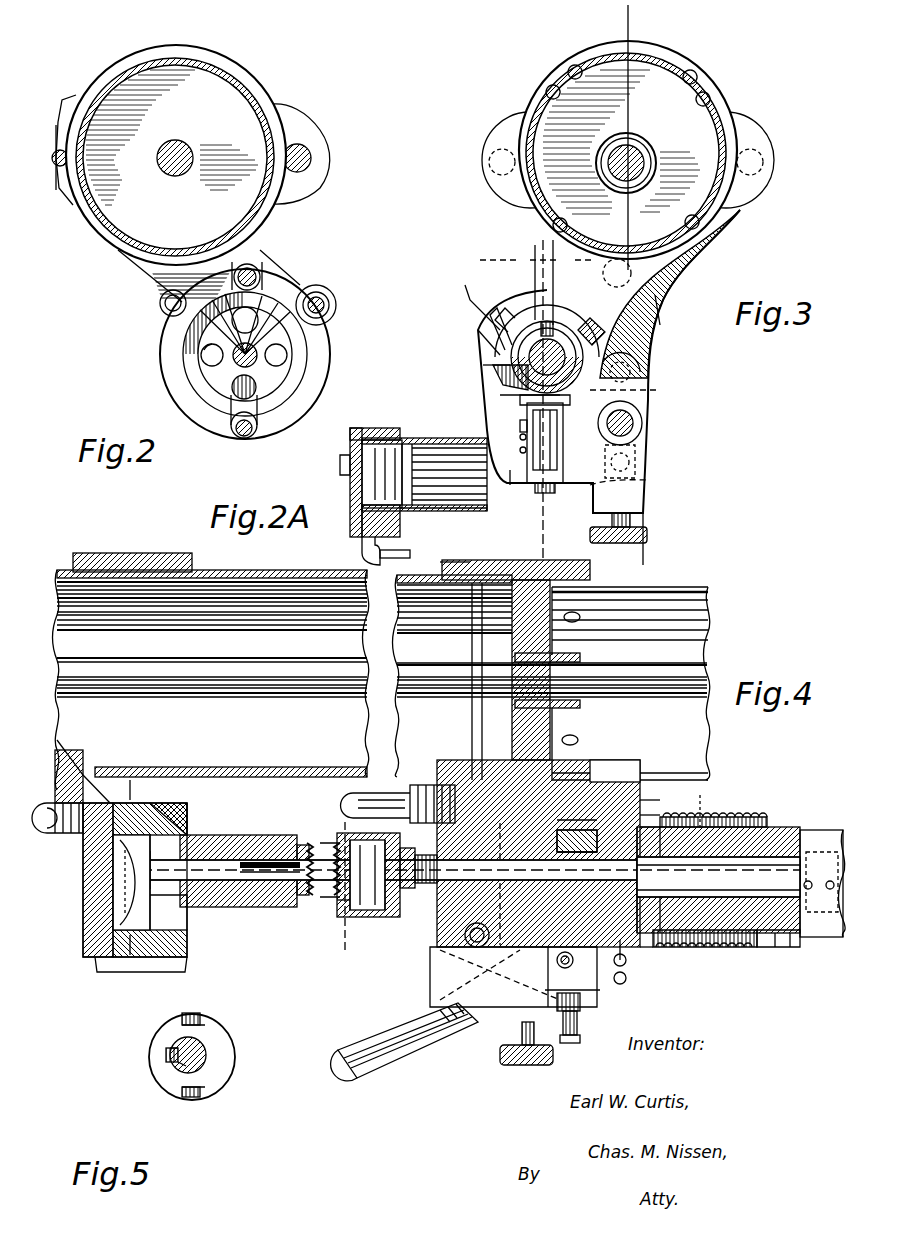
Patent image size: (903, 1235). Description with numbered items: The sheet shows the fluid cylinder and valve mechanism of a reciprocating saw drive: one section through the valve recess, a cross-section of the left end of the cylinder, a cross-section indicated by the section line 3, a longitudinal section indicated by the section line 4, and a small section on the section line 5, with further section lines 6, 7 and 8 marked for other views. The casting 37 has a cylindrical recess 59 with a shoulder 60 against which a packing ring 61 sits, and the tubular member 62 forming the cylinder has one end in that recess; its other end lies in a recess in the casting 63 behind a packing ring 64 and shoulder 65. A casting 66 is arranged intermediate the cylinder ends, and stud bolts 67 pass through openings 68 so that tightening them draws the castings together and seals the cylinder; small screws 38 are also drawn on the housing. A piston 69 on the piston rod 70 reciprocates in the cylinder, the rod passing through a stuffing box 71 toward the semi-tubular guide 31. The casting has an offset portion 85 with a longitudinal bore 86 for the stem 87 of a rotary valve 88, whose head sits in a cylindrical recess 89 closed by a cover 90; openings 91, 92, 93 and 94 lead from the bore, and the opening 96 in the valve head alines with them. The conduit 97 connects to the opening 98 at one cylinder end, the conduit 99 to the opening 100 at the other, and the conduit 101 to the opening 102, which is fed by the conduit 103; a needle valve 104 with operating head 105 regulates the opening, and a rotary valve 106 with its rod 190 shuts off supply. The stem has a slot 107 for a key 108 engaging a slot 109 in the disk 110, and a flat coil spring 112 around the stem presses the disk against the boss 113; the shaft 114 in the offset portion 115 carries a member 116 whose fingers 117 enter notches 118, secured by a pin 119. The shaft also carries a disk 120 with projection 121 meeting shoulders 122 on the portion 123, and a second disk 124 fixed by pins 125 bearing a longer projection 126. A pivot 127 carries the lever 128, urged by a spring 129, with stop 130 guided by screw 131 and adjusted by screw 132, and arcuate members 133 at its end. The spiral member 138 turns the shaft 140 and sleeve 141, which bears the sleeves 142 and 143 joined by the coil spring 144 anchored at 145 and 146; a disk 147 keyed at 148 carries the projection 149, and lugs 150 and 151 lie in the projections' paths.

In FIG. 3, the section line 3 is at (654, 564).
In FIG. 3, the section line 4 is at (616, 22).
In FIG. 4, the section line 5 is at (338, 832).
In FIG. 4, the section line 6 is at (524, 848).
In FIG. 4, the section line 7 is at (128, 756).
In FIG. 4, the section line 8 is at (140, 794).
In FIG. 4, the semi-tubular guide 31 is at (700, 588).
In FIG. 2, the casting 37 is at (252, 120).
In FIG. 3, the casting 37 is at (722, 112).
In FIG. 3, the screws 38 is at (708, 75).
In FIG. 2A, the cylindrical recess 59 is at (455, 555).
In FIG. 3, the shoulder 60 is at (527, 485).
In FIG. 4, the packing ring 61 is at (475, 652).
In FIG. 2A, the tubular member 62 is at (440, 512).
In FIG. 4, the tubular member 62 is at (248, 572).
In FIG. 2A, the casting 63 is at (380, 440).
In FIG. 2A, the packing ring 64 is at (350, 445).
In FIG. 2A, the shoulder 65 is at (362, 432).
In FIG. 2, the casting 66 is at (268, 98).
In FIG. 4, the casting 66 is at (115, 553).
In FIG. 2, the stud bolts 67 is at (63, 125).
In FIG. 3, the stud bolts 67 is at (490, 162).
In FIG. 2, the openings 68 is at (312, 160).
In FIG. 2A, the piston 69 is at (405, 445).
In FIG. 2, the piston rod 70 is at (192, 152).
In FIG. 2A, the piston rod 70 is at (449, 477).
In FIG. 4, the piston rod 70 is at (272, 668).
In FIG. 4, the stuffing box 71 is at (560, 708).
In FIG. 2, the offset portion 85 is at (322, 352).
In FIG. 4, the longitudinal bore 86 is at (255, 840).
In FIG. 4, the stem 87 is at (250, 912).
In FIG. 5, the stem 87 is at (236, 1070).
In FIG. 4, the rotary valve 88 is at (118, 875).
In FIG. 4, the cylindrical recess 89 is at (112, 920).
In FIG. 2, the cover 90 is at (262, 298).
In FIG. 4, the cover 90 is at (125, 935).
In FIG. 2, the opening 91 is at (282, 355).
In FIG. 2, the opening 92 is at (255, 300).
In FIG. 4, the opening 92 is at (185, 820).
In FIG. 2, the opening 93 is at (205, 355).
In FIG. 4, the opening 93 is at (187, 795).
In FIG. 2, the opening 94 is at (236, 390).
In FIG. 4, the opening 94 is at (165, 905).
In FIG. 4, the opening 96 is at (128, 960).
In FIG. 2A, the conduit 97 is at (408, 555).
In FIG. 4, the conduit 97 is at (60, 838).
In FIG. 2A, the opening 98 is at (358, 533).
In FIG. 3, the conduit 99 is at (668, 287).
In FIG. 4, the conduit 99 is at (372, 793).
In FIG. 3, the opening 100 is at (630, 260).
In FIG. 4, the opening 100 is at (500, 775).
In FIG. 4, the conduit 101 is at (372, 917).
In FIG. 3, the opening 102 is at (655, 392).
In FIG. 4, the opening 102 is at (597, 790).
In FIG. 3, the conduit 103 is at (648, 490).
In FIG. 4, the conduit 103 is at (418, 1050).
In FIG. 3, the needle valve 104 is at (632, 518).
In FIG. 4, the needle valve 104 is at (523, 1037).
In FIG. 3, the operating head 105 is at (648, 535).
In FIG. 4, the operating head 105 is at (518, 1066).
In FIG. 3, the rotary valve 106 is at (640, 428).
In FIG. 4, the rotary valve 106 is at (455, 960).
In FIG. 4, the slot 107 is at (315, 845).
In FIG. 5, the slot 107 is at (180, 1062).
In FIG. 5, the key 108 is at (172, 1055).
In FIG. 5, the slot 109 is at (170, 1052).
In FIG. 5, the disk 110 is at (232, 1058).
In FIG. 4, the slot 112 is at (295, 905).
In FIG. 4, the boss 113 is at (280, 900).
In FIG. 4, the shaft 114 is at (420, 856).
In FIG. 3, the offset portion 115 is at (520, 318).
In FIG. 4, the member 116 is at (345, 915).
In FIG. 4, the fingers 117 is at (320, 843).
In FIG. 5, the fingers 117 is at (192, 1015).
In FIG. 5, the notches 118 is at (200, 1026).
In FIG. 4, the pin 119 is at (412, 785).
In FIG. 4, the disk 120 is at (580, 840).
In FIG. 3, the projection 121 is at (517, 393).
In FIG. 3, the shoulders 122 is at (520, 345).
In FIG. 4, the portion 123 is at (585, 812).
In FIG. 4, the second disk 124 is at (640, 965).
In FIG. 3, the pins 125 is at (543, 340).
In FIG. 4, the pins 125 is at (655, 822).
In FIG. 3, the projection 126 is at (525, 340).
In FIG. 4, the projection 126 is at (655, 800).
In FIG. 4, the pivot 127 is at (455, 980).
In FIG. 3, the lever 128 is at (548, 440).
In FIG. 4, the lever 128 is at (477, 945).
In FIG. 4, the spring 129 is at (455, 975).
In FIG. 3, the stop 130 is at (520, 410).
In FIG. 4, the stop 130 is at (590, 975).
In FIG. 3, the screw 131 is at (548, 483).
In FIG. 4, the screw 131 is at (608, 1010).
In FIG. 3, the second screw 132 is at (530, 430).
In FIG. 4, the second screw 132 is at (600, 995).
In FIG. 3, the arcuate shaped members 133 is at (628, 378).
In FIG. 4, the arcuate shaped members 133 is at (640, 950).
In FIG. 4, the spiral member 138 is at (822, 937).
In FIG. 3, the shaft 140 is at (560, 340).
In FIG. 4, the shaft 140 is at (718, 880).
In FIG. 4, the sleeve 141 is at (775, 945).
In FIG. 4, the sleeve 142 is at (790, 950).
In FIG. 4, the sleeve 143 is at (712, 827).
In FIG. 4, the coil spring 144 is at (730, 790).
In FIG. 4, the spring attachment point 145 is at (770, 817).
In FIG. 4, the spring attachment point 146 is at (725, 947).
In FIG. 3, the disk 147 is at (520, 372).
In FIG. 4, the disk 147 is at (720, 881).
In FIG. 3, the key 148 is at (548, 322).
In FIG. 3, the projection 149 is at (463, 350).
In FIG. 3, the lug 150 is at (478, 370).
In FIG. 3, the lug 151 is at (680, 310).
In FIG. 3, the rod 190 is at (632, 432).
In FIG. 4, the rod 190 is at (760, 940).